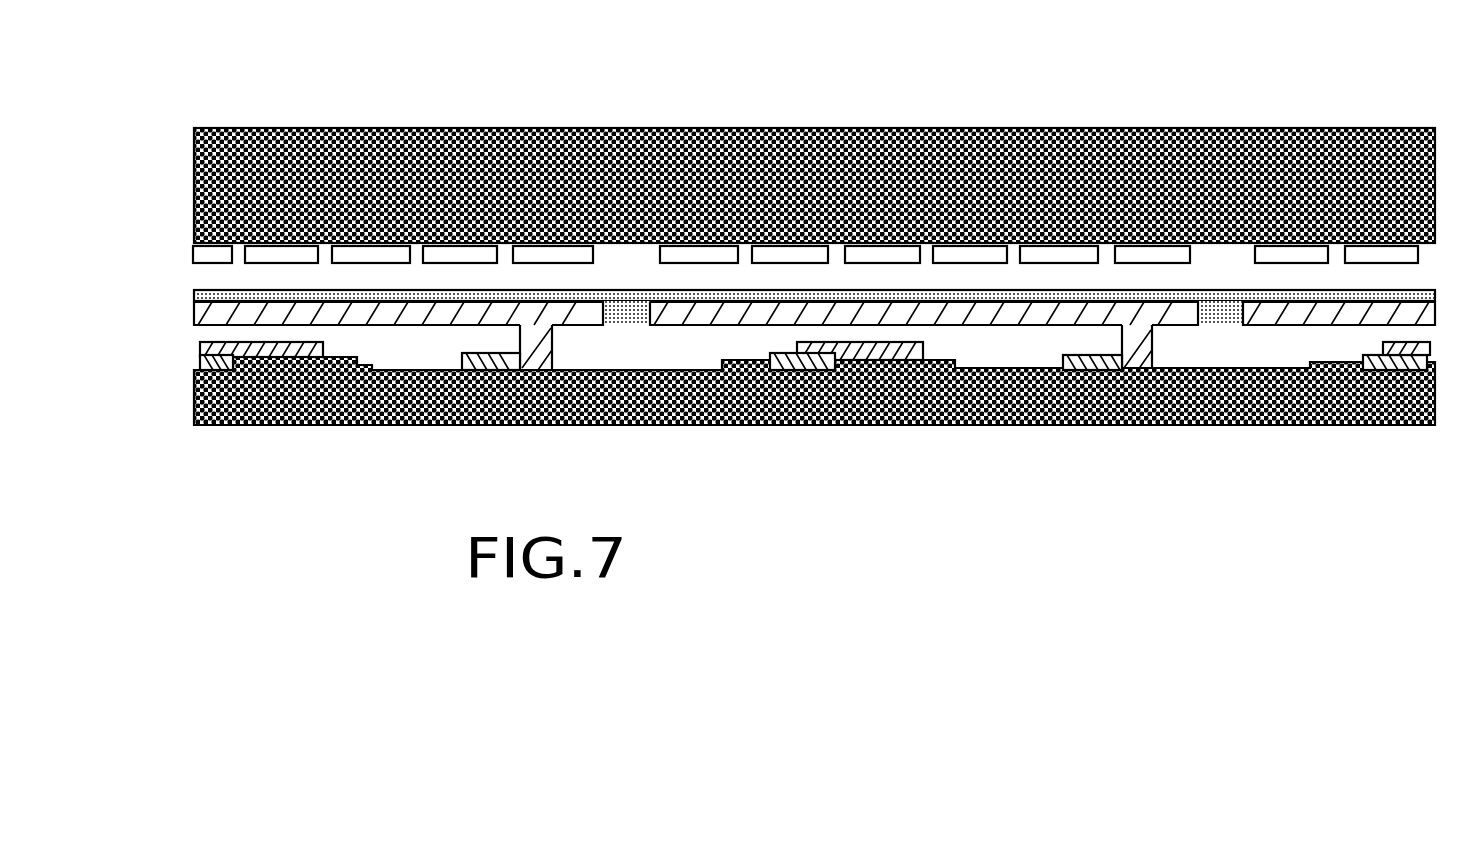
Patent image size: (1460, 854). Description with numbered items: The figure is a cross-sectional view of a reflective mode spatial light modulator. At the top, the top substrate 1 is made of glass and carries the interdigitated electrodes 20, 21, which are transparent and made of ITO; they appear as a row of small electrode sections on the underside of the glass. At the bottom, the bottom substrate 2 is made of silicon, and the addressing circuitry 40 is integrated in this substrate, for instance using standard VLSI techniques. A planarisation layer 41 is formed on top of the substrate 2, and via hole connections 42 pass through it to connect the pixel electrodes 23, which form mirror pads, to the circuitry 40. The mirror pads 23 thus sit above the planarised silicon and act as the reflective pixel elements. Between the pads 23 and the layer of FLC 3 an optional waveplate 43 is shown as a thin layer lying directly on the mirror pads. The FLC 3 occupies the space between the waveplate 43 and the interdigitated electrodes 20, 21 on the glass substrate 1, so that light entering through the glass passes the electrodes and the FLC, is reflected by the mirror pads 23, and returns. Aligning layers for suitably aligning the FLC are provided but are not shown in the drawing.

The top substrate 1 is at (1145, 155).
The bottom substrate 2 is at (1025, 400).
The FLC 3 is at (268, 278).
The interdigitated electrode 20 is at (367, 252).
The interdigitated electrode 21 is at (457, 252).
The pixel electrode 23 is at (428, 308).
The addressing circuitry 40 is at (852, 357).
The planarisation layer 41 is at (1292, 345).
The via hole connection 42 is at (1150, 347).
The waveplate 43 is at (553, 292).